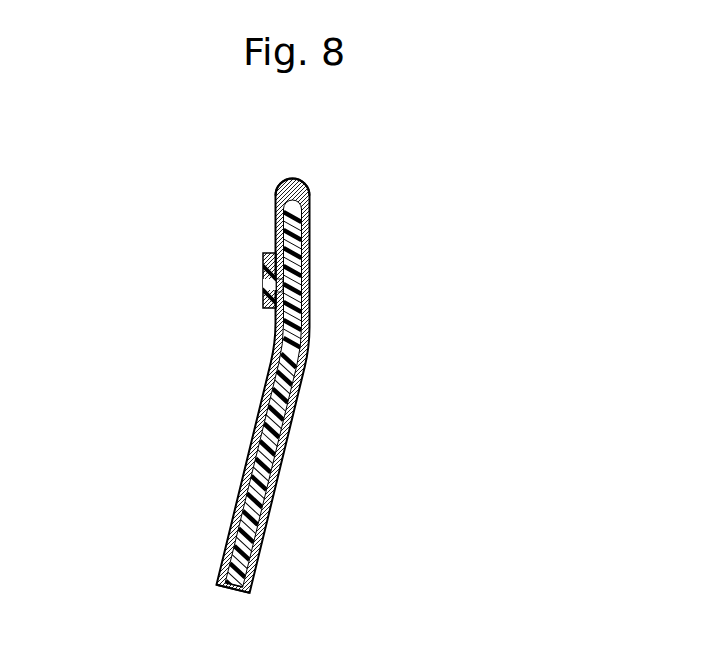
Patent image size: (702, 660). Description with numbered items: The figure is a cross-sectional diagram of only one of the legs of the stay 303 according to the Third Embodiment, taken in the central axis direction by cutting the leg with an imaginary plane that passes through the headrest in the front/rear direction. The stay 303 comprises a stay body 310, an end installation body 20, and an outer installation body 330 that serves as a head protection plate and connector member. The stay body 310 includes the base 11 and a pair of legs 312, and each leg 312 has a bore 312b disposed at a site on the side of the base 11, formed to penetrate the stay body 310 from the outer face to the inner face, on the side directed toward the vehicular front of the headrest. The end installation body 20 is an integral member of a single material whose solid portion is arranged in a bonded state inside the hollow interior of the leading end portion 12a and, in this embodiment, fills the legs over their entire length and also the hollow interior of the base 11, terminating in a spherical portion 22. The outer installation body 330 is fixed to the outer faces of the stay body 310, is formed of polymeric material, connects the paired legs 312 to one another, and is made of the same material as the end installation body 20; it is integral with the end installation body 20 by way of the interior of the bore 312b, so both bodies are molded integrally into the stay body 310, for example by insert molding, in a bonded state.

The stay 303 is at (300, 391).
The stay body 310 is at (306, 353).
The leg 312 is at (308, 313).
The bore 312b is at (277, 283).
The outer installation body 330 is at (269, 301).
The end installation body 20 is at (324, 397).
The base 11 is at (291, 182).
The leading end portion 12a is at (212, 589).
The spherical portion 22 is at (227, 594).